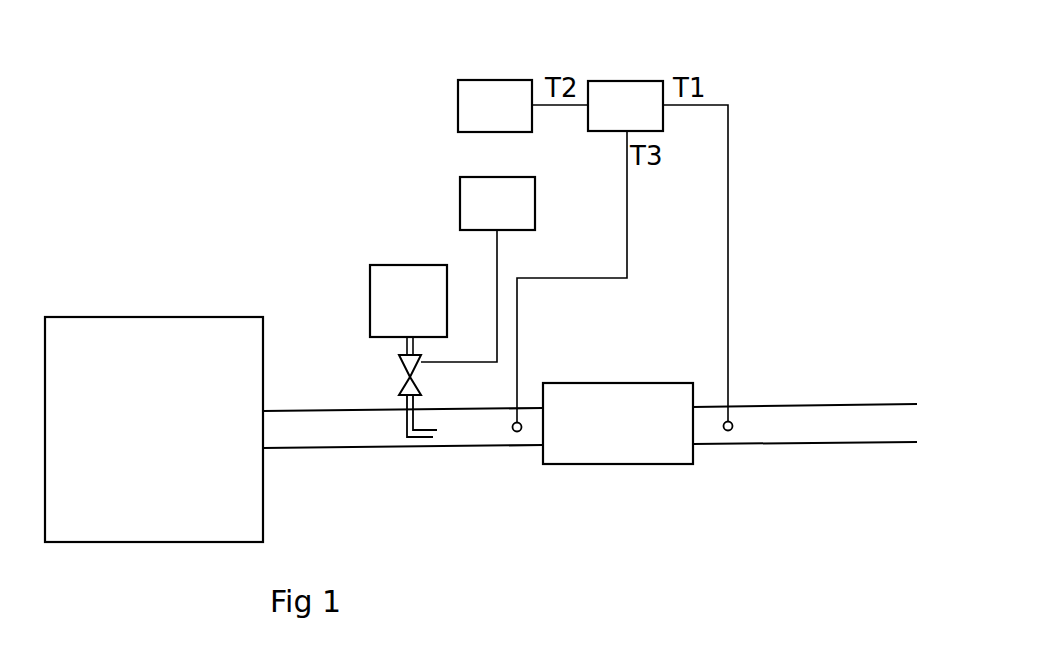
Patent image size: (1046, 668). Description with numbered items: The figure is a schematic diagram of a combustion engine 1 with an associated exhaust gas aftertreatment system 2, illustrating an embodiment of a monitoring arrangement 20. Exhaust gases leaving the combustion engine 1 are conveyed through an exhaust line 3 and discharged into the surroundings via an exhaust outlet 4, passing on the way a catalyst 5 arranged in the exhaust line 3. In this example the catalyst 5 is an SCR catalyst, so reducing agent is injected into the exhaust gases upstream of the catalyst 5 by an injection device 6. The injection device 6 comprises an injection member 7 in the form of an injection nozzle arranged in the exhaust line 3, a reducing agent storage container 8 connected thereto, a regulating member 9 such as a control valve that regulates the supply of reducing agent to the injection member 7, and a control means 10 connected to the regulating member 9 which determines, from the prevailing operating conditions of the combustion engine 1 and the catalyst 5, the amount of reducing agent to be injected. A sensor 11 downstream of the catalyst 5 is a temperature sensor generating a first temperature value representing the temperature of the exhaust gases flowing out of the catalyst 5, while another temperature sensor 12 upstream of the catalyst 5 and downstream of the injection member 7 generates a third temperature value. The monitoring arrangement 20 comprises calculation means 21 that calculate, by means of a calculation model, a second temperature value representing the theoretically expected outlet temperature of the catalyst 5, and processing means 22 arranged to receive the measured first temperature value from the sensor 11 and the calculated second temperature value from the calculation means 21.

The combustion engine 1 is at (212, 323).
The exhaust gas aftertreatment system 2 is at (298, 108).
The exhaust line 3 is at (344, 413).
The exhaust outlet 4 is at (912, 421).
The catalyst 5 is at (602, 452).
The injection device 6 is at (396, 202).
The injection member 7 is at (437, 440).
The reducing agent storage container 8 is at (405, 278).
The regulating member 9 is at (410, 380).
The control means 10 is at (468, 209).
The sensor 11 is at (724, 441).
The temperature sensor 12 is at (514, 448).
The monitoring arrangement 20 is at (772, 87).
The calculation means 21 is at (465, 112).
The processing means 22 is at (628, 93).